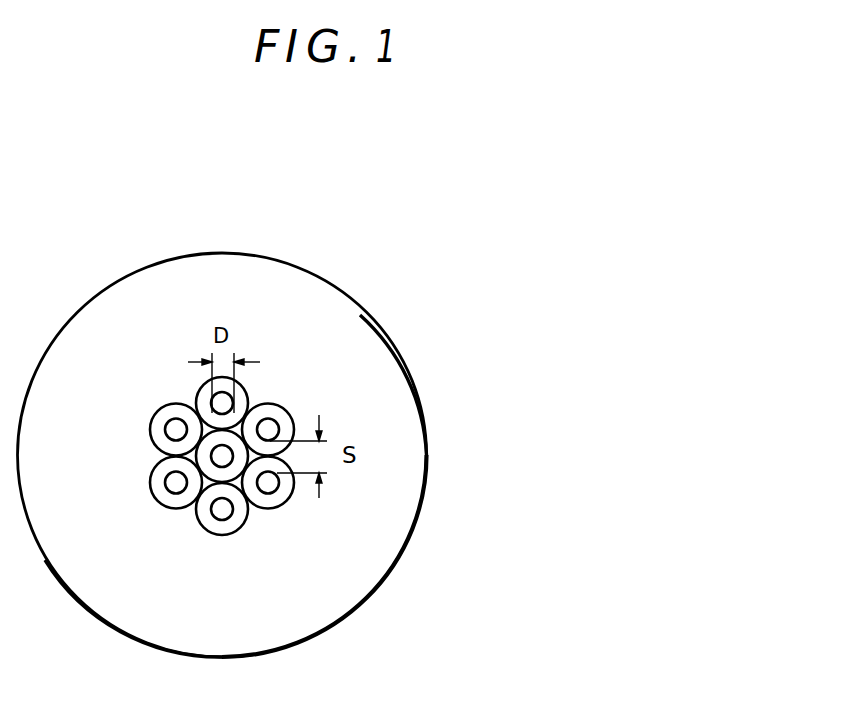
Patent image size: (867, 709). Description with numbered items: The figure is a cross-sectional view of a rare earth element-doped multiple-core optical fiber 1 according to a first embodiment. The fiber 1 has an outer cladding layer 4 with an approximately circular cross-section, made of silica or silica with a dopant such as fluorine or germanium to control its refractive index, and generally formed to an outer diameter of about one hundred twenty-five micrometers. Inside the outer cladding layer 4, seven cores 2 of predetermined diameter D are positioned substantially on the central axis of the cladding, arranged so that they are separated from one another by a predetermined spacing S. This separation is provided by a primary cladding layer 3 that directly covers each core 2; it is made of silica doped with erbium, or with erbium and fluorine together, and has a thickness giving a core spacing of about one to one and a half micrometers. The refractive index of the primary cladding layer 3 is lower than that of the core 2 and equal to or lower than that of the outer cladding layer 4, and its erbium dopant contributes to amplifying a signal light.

The rare earth element-doped multiple-core optical fiber 1 is at (363, 437).
The core 2 is at (268, 429).
The primary cladding layer 3 is at (290, 496).
The outer cladding layer 4 is at (318, 566).